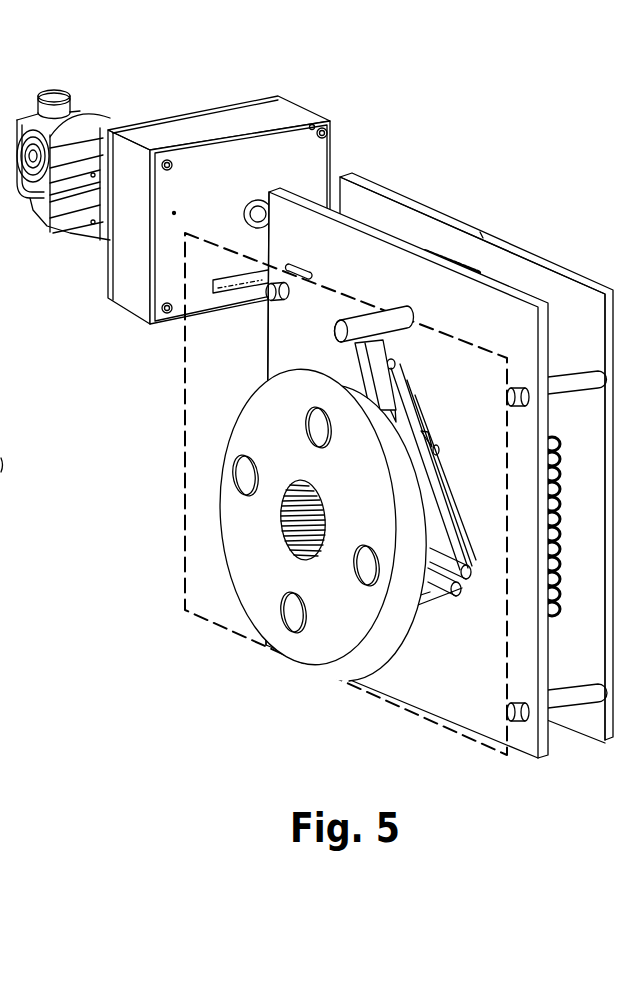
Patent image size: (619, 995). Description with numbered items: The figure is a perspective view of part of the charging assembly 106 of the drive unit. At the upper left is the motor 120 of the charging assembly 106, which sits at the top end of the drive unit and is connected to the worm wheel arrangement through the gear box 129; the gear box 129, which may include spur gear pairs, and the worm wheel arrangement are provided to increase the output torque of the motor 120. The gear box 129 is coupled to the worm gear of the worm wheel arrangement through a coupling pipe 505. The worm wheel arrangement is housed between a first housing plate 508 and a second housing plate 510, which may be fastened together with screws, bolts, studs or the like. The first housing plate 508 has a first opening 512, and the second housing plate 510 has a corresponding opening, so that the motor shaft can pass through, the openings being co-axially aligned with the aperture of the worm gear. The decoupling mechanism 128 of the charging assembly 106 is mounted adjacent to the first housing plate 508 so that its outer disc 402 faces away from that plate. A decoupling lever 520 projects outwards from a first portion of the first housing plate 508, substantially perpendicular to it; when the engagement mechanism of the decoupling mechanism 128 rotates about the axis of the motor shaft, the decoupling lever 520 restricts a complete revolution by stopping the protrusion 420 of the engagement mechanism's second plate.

The charging assembly 106 is at (457, 140).
The motor 120 is at (121, 115).
The decoupling mechanism 128 is at (183, 488).
The gear box 129 is at (185, 215).
The outer disc 402 is at (409, 618).
The protrusion 420 is at (373, 368).
The coupling pipe 505 is at (263, 222).
The first housing plate 508 is at (320, 281).
The second housing plate 510 is at (525, 271).
The first opening 512 is at (436, 450).
The decoupling lever 520 is at (375, 295).